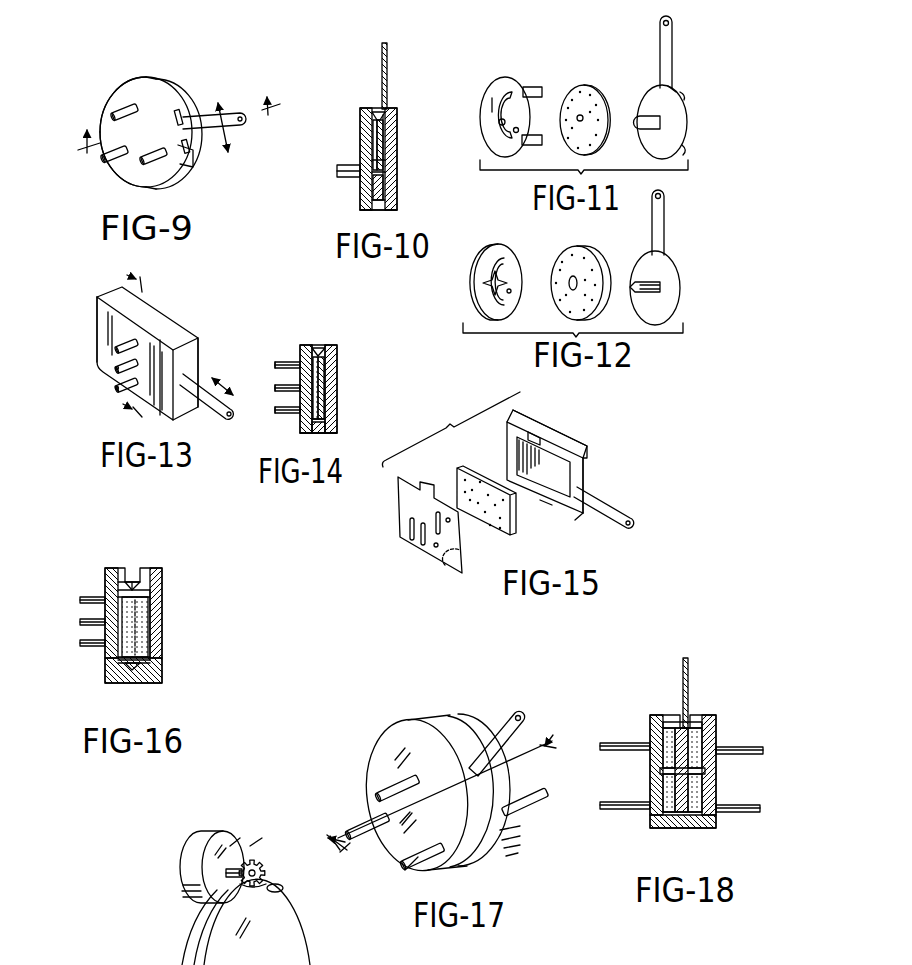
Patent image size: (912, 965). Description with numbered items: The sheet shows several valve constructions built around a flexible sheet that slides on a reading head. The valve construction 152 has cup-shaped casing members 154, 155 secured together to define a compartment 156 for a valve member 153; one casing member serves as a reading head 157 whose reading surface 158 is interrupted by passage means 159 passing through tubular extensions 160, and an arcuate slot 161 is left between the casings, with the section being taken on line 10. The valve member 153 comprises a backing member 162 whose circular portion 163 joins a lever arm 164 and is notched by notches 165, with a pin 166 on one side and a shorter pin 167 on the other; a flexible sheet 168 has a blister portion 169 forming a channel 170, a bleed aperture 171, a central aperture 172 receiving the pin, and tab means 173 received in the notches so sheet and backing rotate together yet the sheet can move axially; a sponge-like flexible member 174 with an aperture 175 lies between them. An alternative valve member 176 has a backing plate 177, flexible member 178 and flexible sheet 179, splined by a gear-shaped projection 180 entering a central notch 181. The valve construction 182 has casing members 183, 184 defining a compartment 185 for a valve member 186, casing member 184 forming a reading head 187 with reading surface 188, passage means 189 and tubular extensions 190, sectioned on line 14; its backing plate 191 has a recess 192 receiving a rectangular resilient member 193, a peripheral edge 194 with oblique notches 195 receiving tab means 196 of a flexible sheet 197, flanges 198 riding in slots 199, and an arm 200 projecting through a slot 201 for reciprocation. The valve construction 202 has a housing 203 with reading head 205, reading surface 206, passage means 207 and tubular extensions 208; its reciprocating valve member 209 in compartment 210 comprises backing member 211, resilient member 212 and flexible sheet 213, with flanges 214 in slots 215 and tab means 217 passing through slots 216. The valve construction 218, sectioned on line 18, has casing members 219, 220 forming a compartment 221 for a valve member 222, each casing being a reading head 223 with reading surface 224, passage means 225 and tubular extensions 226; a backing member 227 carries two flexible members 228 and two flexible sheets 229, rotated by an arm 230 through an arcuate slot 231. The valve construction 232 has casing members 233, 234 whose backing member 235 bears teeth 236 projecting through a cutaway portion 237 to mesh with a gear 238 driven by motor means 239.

In FIG. 9, the section line 10— 10 is at (179, 113).
In FIG. 13, the section line 14— 14 is at (123, 341).
In FIG. 17, the section line 18— 18 is at (429, 781).
In FIG. 9, the valve construction 152 is at (175, 67).
In FIG. 10, the valve construction 152 is at (402, 72).
In FIG. 11, the valve member 153 is at (550, 58).
In FIG. 9, the casing member 154 is at (170, 100).
In FIG. 10, the casing member 154 is at (397, 122).
In FIG. 9, the casing member 155 is at (115, 105).
In FIG. 10, the casing member 155 is at (360, 113).
In FIG. 10, the compartment 156 is at (375, 112).
In FIG. 9, the reading head 157 is at (132, 158).
In FIG. 10, the reading head 157 is at (362, 203).
In FIG. 10, the reading surface 158 is at (358, 192).
In FIG. 9, the passage means 159 is at (113, 117).
In FIG. 10, the passage means 159 is at (345, 165).
In FIG. 9, the tubular extensions 160 is at (132, 102).
In FIG. 10, the tubular extensions 160 is at (345, 178).
In FIG. 9, the arcuate slot 161 is at (177, 125).
In FIG. 10, the backing member 162 is at (388, 186).
In FIG. 11, the backing member 162 is at (688, 125).
In FIG. 11, the circular portion 163 is at (673, 90).
In FIG. 10, the lever arm 164 is at (383, 60).
In FIG. 11, the lever arm 164 is at (668, 52).
In FIG. 11, the notches 165 is at (682, 98).
In FIG. 10, the pin 166 is at (370, 157).
In FIG. 11, the pin 166 is at (642, 117).
In FIG. 10, the shorter pin 167 is at (388, 172).
In FIG. 10, the flexible sheet 168 is at (372, 132).
In FIG. 11, the flexible sheet 168 is at (525, 113).
In FIG. 11, the blister portion 169 is at (492, 95).
In FIG. 11, the channel 170 is at (490, 110).
In FIG. 11, the bleed aperture 171 is at (516, 133).
In FIG. 11, the central aperture 172 is at (502, 126).
In FIG. 11, the tab means 173 is at (528, 87).
In FIG. 10, the flexible member 174 is at (392, 150).
In FIG. 11, the flexible member 174 is at (588, 87).
In FIG. 11, the aperture 175 is at (578, 122).
In FIG. 12, the valve member 176 is at (562, 237).
In FIG. 12, the backing plate 177 is at (673, 263).
In FIG. 12, the flexible member 178 is at (588, 259).
In FIG. 12, the flexible sheet 179 is at (512, 268).
In FIG. 12, the gear-shaped projection 180 is at (642, 290).
In FIG. 12, the central notch 181 is at (497, 296).
In FIG. 13, the valve construction 182 is at (203, 313).
In FIG. 14, the valve construction 182 is at (375, 332).
In FIG. 13, the casing member 183 is at (193, 353).
In FIG. 14, the casing member 183 is at (308, 348).
In FIG. 13, the casing member 184 is at (102, 338).
In FIG. 14, the casing member 184 is at (337, 357).
In FIG. 14, the compartment 185 is at (317, 350).
In FIG. 14, the valve member 186 is at (328, 352).
In FIG. 15, the valve member 186 is at (603, 415).
In FIG. 13, the reading head 187 is at (153, 407).
In FIG. 14, the reading head 187 is at (300, 378).
In FIG. 14, the reading surface 188 is at (318, 432).
In FIG. 13, the passage means 189 is at (117, 352).
In FIG. 14, the passage means 189 is at (283, 392).
In FIG. 13, the tubular extensions 190 is at (116, 390).
In FIG. 14, the tubular extensions 190 is at (295, 364).
In FIG. 14, the backing plate 191 is at (325, 406).
In FIG. 15, the backing plate 191 is at (583, 470).
In FIG. 15, the recess 192 is at (547, 468).
In FIG. 14, the resilient member 193 is at (333, 380).
In FIG. 15, the resilient member 193 is at (467, 465).
In FIG. 15, the peripheral edge 194 is at (512, 412).
In FIG. 15, the notches 195 is at (530, 432).
In FIG. 15, the tab means 196 is at (427, 480).
In FIG. 14, the flexible sheet 197 is at (325, 390).
In FIG. 15, the flexible sheet 197 is at (403, 495).
In FIG. 14, the flanges 198 is at (330, 423).
In FIG. 15, the flanges 198 is at (553, 440).
In FIG. 14, the slots 199 is at (322, 434).
In FIG. 13, the arm 200 is at (207, 405).
In FIG. 15, the arm 200 is at (605, 507).
In FIG. 13, the slot 201 is at (185, 376).
In FIG. 16, the valve construction 202 is at (175, 548).
In FIG. 16, the housing 203 is at (160, 590).
In FIG. 16, the reading head 205 is at (107, 590).
In FIG. 16, the reading surface 206 is at (130, 583).
In FIG. 16, the passage means 207 is at (98, 597).
In FIG. 16, the tubular extensions 208 is at (87, 619).
In FIG. 16, the reciprocating valve member 209 is at (163, 592).
In FIG. 16, the compartment 210 is at (145, 658).
In FIG. 16, the backing member 211 is at (150, 622).
In FIG. 16, the resilient member 212 is at (128, 664).
In FIG. 16, the flexible sheet 213 is at (112, 657).
In FIG. 16, the flanges 214 is at (140, 587).
In FIG. 16, the slots 215 is at (131, 582).
In FIG. 16, the slots 216 is at (142, 597).
In FIG. 16, the tab means 217 is at (160, 600).
In FIG. 17, the valve construction 218 is at (470, 690).
In FIG. 18, the valve construction 218 is at (763, 683).
In FIG. 17, the casing member 219 is at (472, 730).
In FIG. 18, the casing member 219 is at (713, 727).
In FIG. 17, the casing member 220 is at (412, 740).
In FIG. 18, the casing member 220 is at (652, 720).
In FIG. 18, the compartment 221 is at (697, 727).
In FIG. 18, the valve member 222 is at (690, 725).
In FIG. 17, the reading head 223 is at (520, 823).
In FIG. 18, the reading head 223 is at (652, 756).
In FIG. 18, the reading surface 224 is at (668, 818).
In FIG. 18, the passage means 225 is at (615, 810).
In FIG. 17, the tubular extensions 226 is at (380, 797).
In FIG. 18, the tubular extensions 226 is at (612, 745).
In FIG. 18, the backing member 227 is at (680, 818).
In FIG. 18, the flexible members 228 is at (707, 778).
In FIG. 18, the flexible sheets 229 is at (655, 787).
In FIG. 17, the arm 230 is at (497, 728).
In FIG. 18, the arm 230 is at (688, 673).
In FIG. 17, the arcuate slot 231 is at (517, 795).
In FIG. 19, the valve construction 232 is at (285, 845).
In FIG. 19, the casing member 233 is at (213, 913).
In FIG. 19, the casing member 234 is at (198, 923).
In FIG. 19, the backing member 235 is at (263, 883).
In FIG. 19, the teeth 236 is at (252, 858).
In FIG. 19, the cutaway portion 237 is at (283, 888).
In FIG. 19, the gear 238 is at (262, 860).
In FIG. 19, the motor means 239 is at (227, 838).